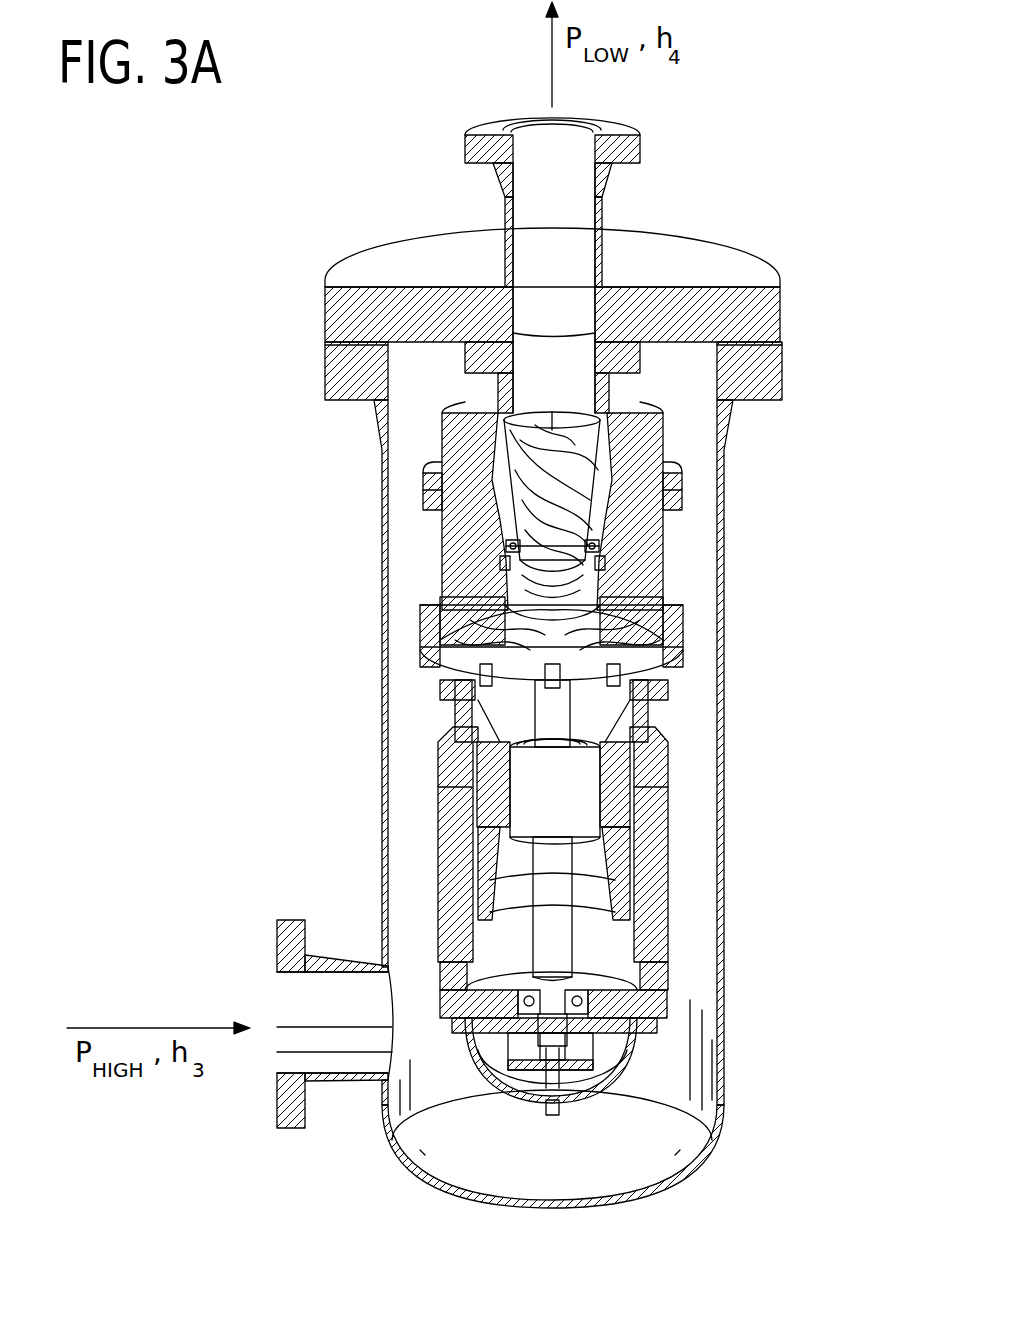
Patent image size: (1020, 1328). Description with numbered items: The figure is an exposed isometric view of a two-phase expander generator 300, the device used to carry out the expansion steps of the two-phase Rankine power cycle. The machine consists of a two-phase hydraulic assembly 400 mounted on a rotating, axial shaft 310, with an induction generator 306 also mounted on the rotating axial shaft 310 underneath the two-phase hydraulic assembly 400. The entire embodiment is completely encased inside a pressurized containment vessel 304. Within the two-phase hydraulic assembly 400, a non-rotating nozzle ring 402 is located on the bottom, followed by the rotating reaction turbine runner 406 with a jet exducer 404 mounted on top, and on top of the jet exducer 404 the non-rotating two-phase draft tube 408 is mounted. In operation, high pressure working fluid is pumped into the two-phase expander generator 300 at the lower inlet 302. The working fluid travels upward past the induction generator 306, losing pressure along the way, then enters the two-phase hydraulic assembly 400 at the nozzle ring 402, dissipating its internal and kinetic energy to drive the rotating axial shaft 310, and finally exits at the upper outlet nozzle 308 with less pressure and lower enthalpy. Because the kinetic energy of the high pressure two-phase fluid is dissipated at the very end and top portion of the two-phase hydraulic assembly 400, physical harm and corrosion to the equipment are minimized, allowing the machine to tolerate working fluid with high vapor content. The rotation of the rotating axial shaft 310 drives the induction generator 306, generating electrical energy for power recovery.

The two-phase expander generator 300 is at (243, 200).
The lower inlet 302 is at (352, 1080).
The pressurized containment vessel 304 is at (724, 964).
The induction generator 306 is at (622, 770).
The upper outlet nozzle 308 is at (530, 136).
The rotating axial shaft 310 is at (562, 888).
The two-phase hydraulic assembly 400 is at (612, 556).
The non-rotating nozzle ring 402 is at (643, 660).
The jet exducer 404 is at (470, 566).
The rotating reaction turbine runner 406 is at (440, 620).
The non-rotating two-phase draft tube 408 is at (505, 533).